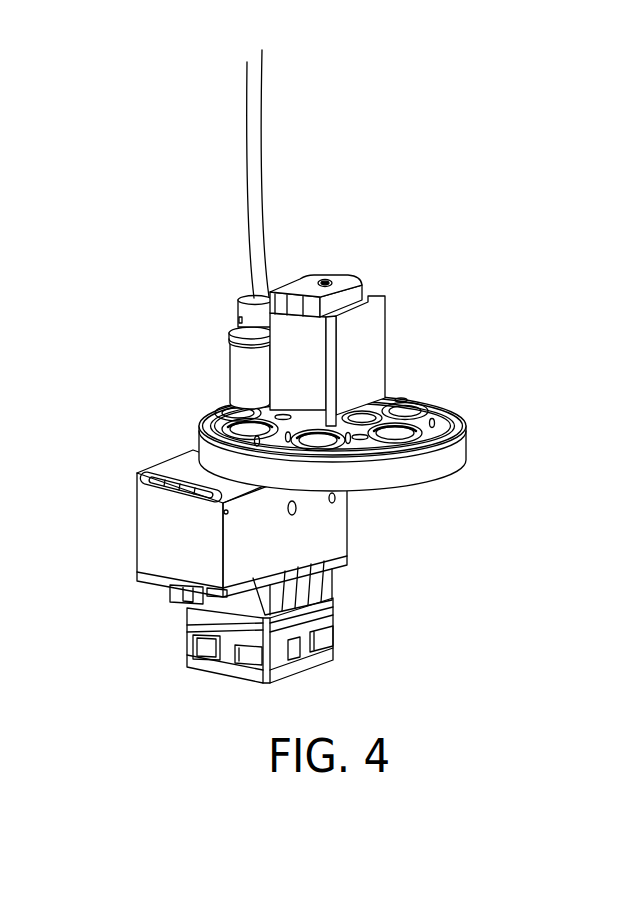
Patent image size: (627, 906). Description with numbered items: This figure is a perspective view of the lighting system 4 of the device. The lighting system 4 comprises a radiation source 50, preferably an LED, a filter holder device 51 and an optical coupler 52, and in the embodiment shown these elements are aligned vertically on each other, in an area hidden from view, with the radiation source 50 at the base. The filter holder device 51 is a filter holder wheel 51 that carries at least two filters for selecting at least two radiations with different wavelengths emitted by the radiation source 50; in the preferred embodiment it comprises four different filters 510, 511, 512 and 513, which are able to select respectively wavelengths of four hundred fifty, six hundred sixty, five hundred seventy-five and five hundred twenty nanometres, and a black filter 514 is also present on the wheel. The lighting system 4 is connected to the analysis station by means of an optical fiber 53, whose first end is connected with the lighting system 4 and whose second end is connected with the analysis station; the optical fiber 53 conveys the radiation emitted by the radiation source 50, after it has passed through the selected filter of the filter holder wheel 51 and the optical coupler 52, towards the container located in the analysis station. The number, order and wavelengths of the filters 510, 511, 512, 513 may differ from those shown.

The lighting system 4 is at (186, 329).
The radiation source 50 is at (268, 540).
The filter holder wheel 51 is at (390, 463).
The optical coupler 52 is at (365, 363).
The optical fiber 53 is at (254, 182).
The filter 510 is at (242, 405).
The filter 511 is at (213, 432).
The filter 512 is at (323, 450).
The filter 513 is at (458, 423).
The black filter 514 is at (430, 403).